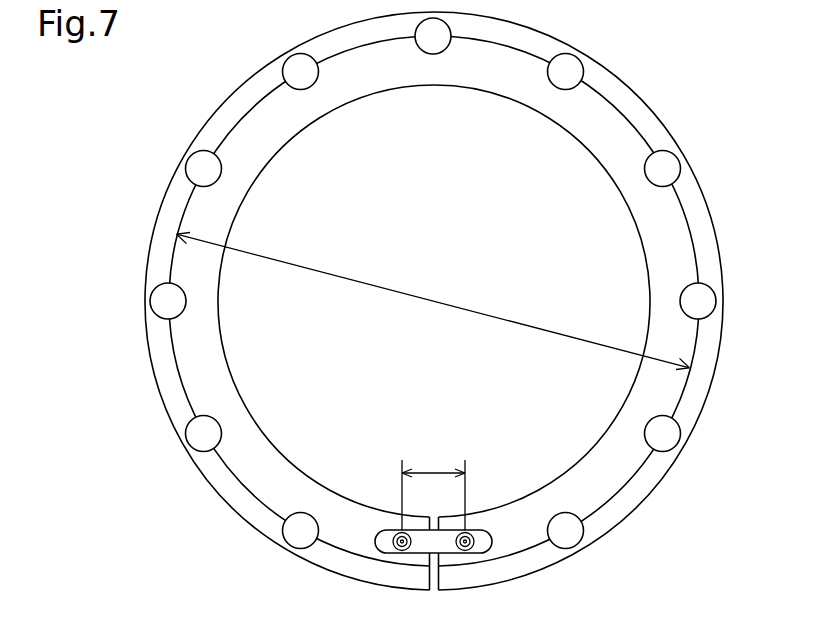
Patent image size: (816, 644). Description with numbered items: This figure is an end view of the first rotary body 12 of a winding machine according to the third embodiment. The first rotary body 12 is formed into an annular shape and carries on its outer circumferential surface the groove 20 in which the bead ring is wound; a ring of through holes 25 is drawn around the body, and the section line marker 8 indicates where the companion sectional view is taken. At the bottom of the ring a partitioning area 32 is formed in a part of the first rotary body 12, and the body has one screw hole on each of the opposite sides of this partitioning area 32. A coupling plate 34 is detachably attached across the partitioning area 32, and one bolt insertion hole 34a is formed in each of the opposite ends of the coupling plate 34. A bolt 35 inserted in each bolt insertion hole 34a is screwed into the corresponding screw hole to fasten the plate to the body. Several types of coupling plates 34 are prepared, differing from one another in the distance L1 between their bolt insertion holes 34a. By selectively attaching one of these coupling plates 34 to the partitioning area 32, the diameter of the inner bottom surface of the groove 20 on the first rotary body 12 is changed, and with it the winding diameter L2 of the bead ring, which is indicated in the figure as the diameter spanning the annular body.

The first rotary body 12 is at (253, 70).
The groove 20 is at (236, 112).
The through holes 25 is at (442, 55).
The partitioning area 32 is at (430, 583).
The coupling plate 34 is at (418, 547).
The bolt insertion hole 34a is at (398, 530).
The bolt 35 is at (395, 554).
The distance between bolt insertion holes L1 is at (433, 485).
The winding diameter L2 is at (433, 301).
The section line 8 is at (208, 542).